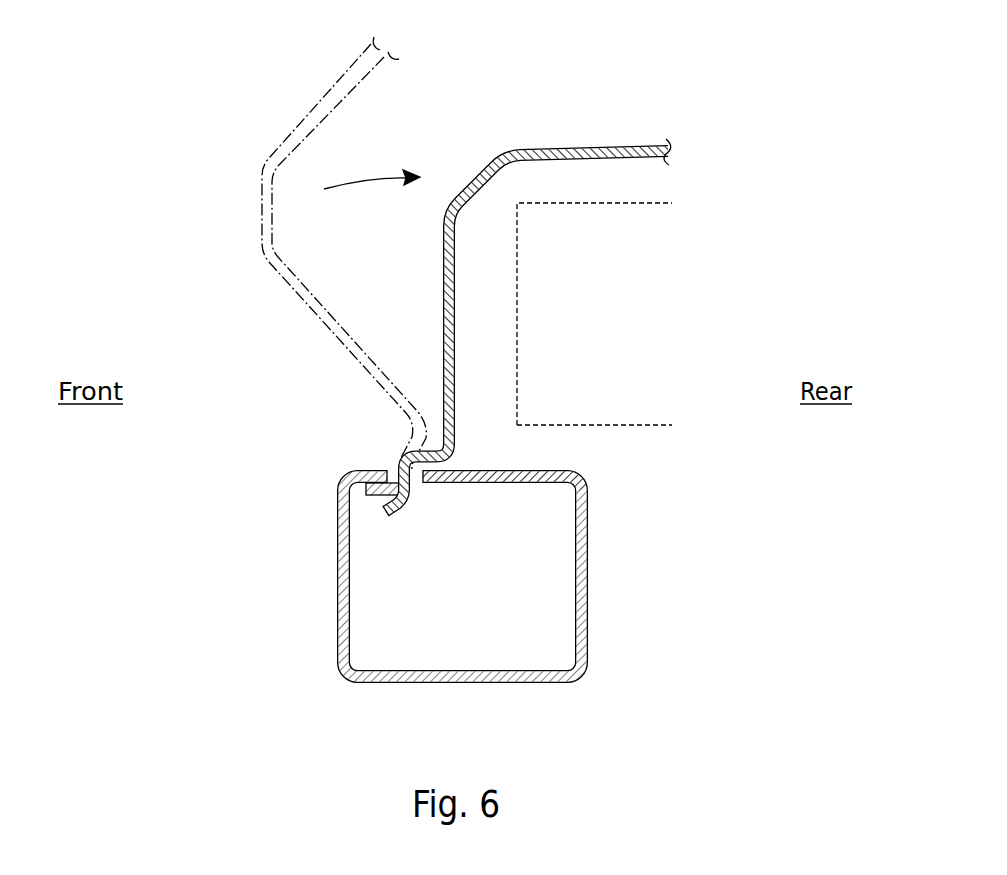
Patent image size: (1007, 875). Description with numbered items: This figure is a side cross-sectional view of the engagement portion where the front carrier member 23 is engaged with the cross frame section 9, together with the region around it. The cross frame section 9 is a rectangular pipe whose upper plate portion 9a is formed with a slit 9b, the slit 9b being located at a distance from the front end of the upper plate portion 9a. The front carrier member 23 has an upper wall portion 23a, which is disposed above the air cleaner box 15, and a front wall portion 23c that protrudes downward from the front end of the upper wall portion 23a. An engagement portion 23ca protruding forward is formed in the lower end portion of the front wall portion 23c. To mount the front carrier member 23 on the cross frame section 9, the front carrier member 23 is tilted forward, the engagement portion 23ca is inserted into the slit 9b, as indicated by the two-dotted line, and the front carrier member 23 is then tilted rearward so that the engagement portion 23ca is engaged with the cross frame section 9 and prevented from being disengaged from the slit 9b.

The cross frame section 9 is at (441, 560).
The upper plate portion 9a is at (547, 468).
The slit 9b is at (390, 475).
The air cleaner box 15 is at (663, 428).
The front carrier member 23 is at (521, 308).
The upper wall portion 23a is at (643, 142).
The front wall portion 23c is at (442, 267).
The engagement portion 23ca is at (374, 507).